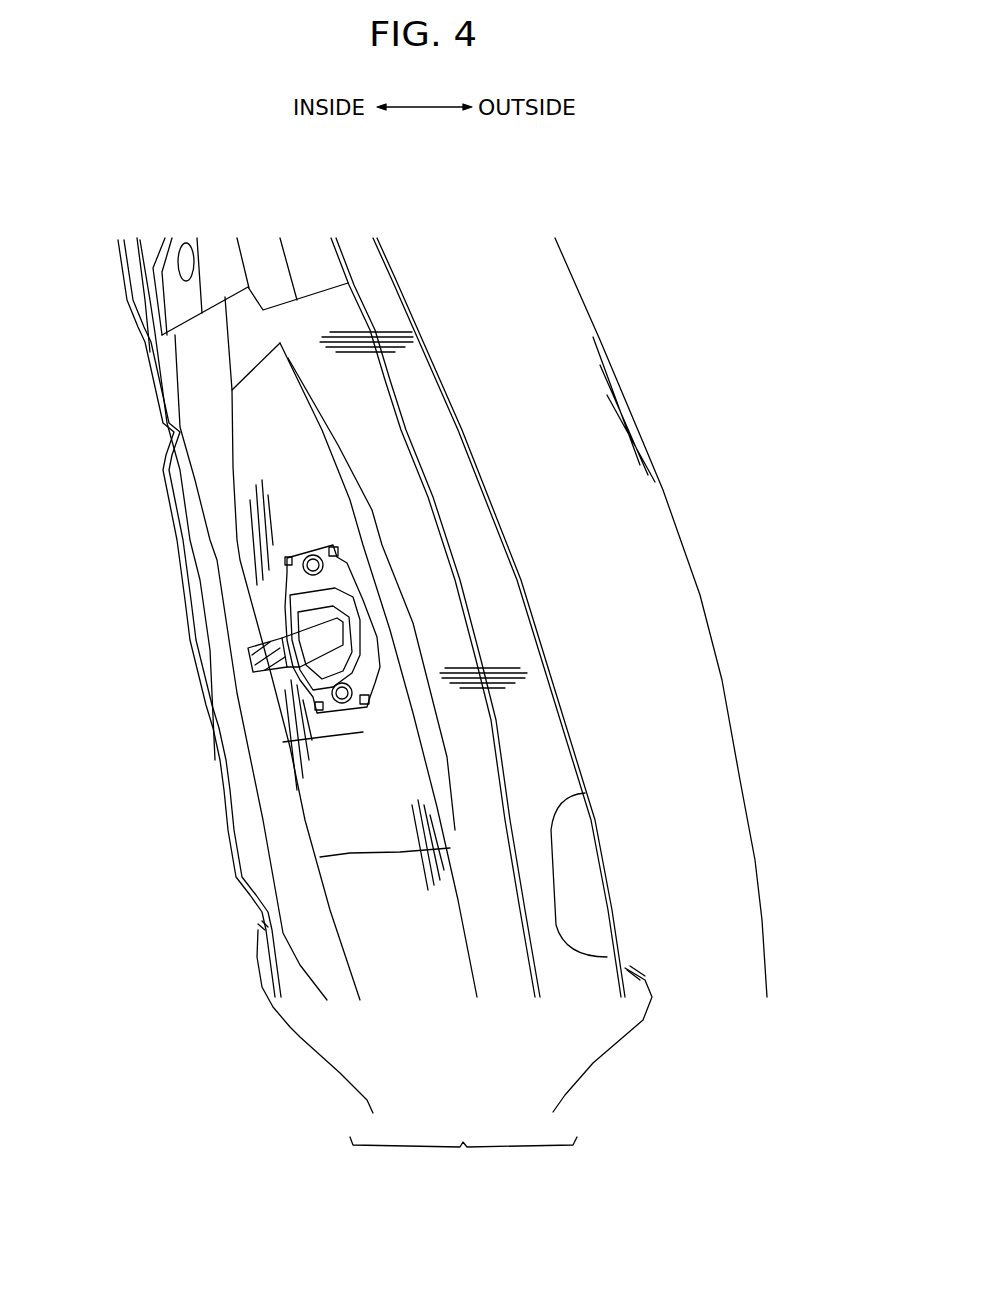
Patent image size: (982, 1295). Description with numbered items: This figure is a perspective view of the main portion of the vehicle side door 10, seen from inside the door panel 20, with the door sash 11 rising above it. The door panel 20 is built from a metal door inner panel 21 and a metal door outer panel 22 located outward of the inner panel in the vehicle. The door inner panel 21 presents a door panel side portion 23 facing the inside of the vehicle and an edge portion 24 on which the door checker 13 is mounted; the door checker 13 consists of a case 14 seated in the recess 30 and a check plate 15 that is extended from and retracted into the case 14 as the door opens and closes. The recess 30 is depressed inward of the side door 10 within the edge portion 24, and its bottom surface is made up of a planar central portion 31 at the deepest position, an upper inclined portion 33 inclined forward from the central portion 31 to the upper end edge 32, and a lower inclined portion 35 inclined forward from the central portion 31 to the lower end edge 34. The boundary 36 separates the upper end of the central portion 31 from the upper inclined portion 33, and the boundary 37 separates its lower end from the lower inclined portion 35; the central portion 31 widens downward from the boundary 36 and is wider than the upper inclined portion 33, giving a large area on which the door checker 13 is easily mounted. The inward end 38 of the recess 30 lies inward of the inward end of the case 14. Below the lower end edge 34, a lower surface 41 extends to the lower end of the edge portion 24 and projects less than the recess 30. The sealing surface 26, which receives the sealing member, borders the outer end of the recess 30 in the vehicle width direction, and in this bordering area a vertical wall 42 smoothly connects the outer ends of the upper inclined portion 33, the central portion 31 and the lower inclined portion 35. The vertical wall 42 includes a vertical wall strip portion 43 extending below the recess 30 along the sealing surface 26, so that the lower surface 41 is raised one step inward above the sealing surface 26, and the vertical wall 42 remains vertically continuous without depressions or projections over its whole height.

The side door 10 is at (593, 202).
The door sash 11 is at (343, 255).
The door checker 13 is at (78, 585).
The case 14 is at (291, 607).
The check plate 15 is at (247, 658).
The door panel 20 is at (463, 1159).
The door inner panel 21 is at (321, 1032).
The door outer panel 22 is at (597, 1056).
The door panel side portion 23 is at (222, 817).
The edge portion 24 is at (416, 983).
The sealing surface 26 is at (433, 590).
The recess 30 is at (268, 702).
The central portion 31 is at (392, 679).
The upper end edge 32 is at (252, 383).
The upper inclined portion 33 is at (292, 435).
The lower end edge 34 is at (390, 853).
The lower inclined portion 35 is at (393, 780).
The boundary 36 is at (286, 550).
The boundary 37 is at (367, 730).
The inward end 38 is at (235, 468).
The lower surface 41 is at (438, 920).
The vertical wall 42 is at (380, 543).
The vertical wall strip portion 43 is at (477, 947).